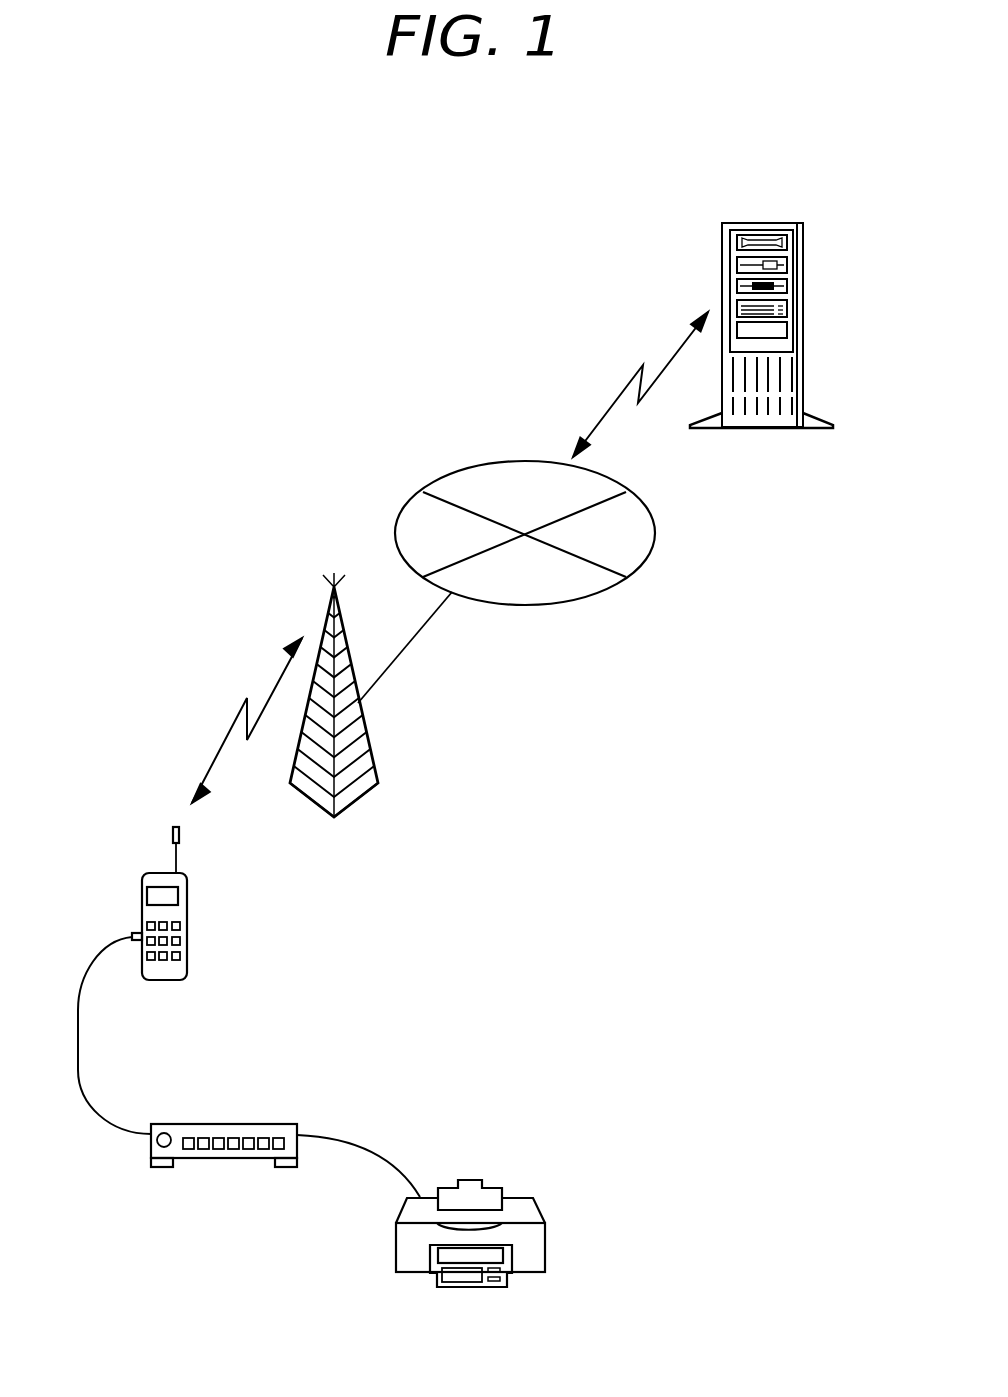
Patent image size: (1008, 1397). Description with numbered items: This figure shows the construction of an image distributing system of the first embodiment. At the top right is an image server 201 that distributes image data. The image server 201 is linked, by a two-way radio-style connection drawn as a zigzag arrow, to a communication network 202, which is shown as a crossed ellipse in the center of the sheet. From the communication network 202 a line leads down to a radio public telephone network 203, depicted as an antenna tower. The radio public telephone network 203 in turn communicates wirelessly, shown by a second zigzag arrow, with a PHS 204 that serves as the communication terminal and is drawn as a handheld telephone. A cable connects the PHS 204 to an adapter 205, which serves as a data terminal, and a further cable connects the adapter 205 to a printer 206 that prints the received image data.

The image server 201 is at (737, 223).
The communication network 202 is at (468, 468).
The radio public telephone network 203 is at (378, 773).
The PHS 204 is at (188, 945).
The adapter 205 is at (260, 1123).
The printer 206 is at (518, 1197).